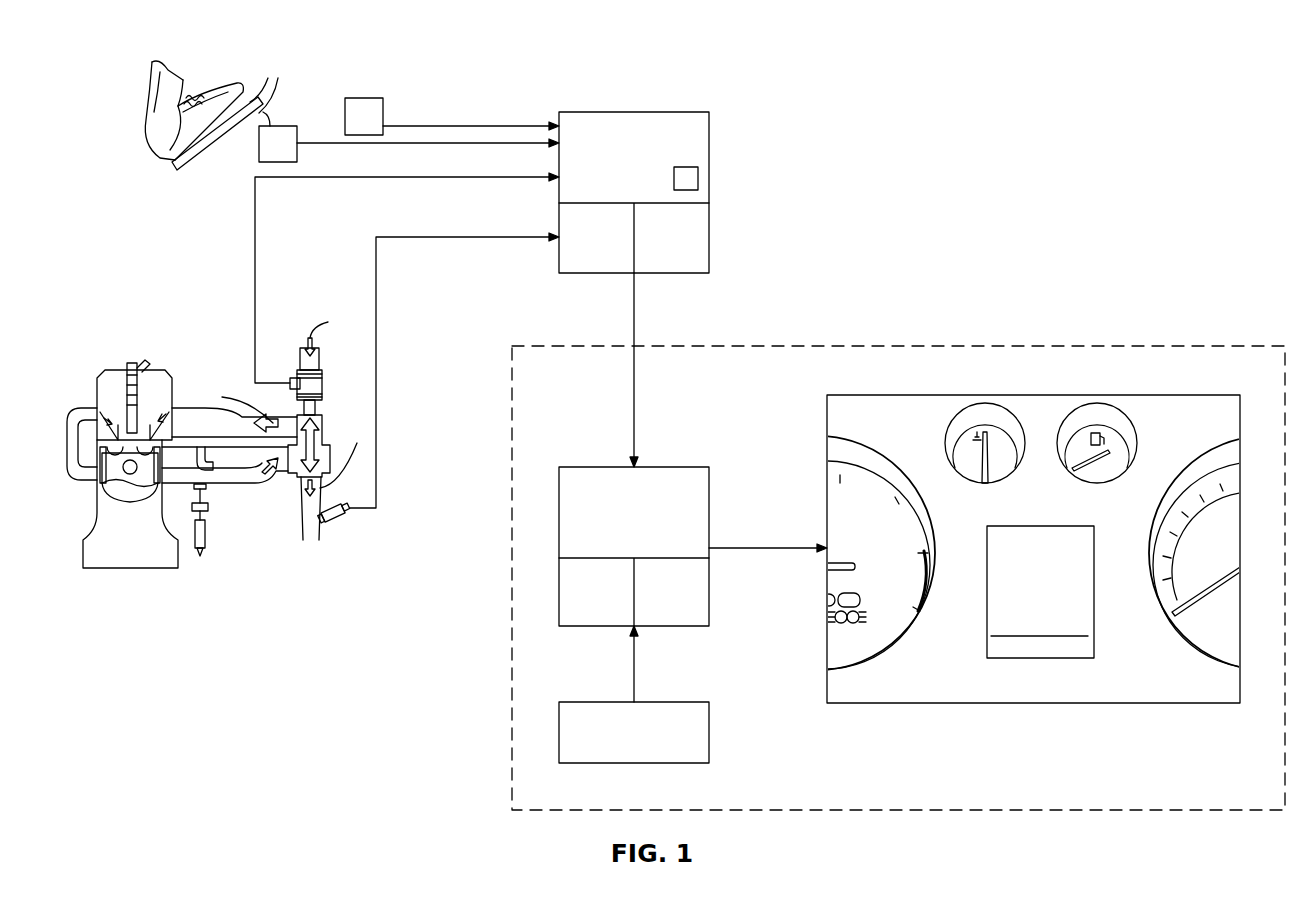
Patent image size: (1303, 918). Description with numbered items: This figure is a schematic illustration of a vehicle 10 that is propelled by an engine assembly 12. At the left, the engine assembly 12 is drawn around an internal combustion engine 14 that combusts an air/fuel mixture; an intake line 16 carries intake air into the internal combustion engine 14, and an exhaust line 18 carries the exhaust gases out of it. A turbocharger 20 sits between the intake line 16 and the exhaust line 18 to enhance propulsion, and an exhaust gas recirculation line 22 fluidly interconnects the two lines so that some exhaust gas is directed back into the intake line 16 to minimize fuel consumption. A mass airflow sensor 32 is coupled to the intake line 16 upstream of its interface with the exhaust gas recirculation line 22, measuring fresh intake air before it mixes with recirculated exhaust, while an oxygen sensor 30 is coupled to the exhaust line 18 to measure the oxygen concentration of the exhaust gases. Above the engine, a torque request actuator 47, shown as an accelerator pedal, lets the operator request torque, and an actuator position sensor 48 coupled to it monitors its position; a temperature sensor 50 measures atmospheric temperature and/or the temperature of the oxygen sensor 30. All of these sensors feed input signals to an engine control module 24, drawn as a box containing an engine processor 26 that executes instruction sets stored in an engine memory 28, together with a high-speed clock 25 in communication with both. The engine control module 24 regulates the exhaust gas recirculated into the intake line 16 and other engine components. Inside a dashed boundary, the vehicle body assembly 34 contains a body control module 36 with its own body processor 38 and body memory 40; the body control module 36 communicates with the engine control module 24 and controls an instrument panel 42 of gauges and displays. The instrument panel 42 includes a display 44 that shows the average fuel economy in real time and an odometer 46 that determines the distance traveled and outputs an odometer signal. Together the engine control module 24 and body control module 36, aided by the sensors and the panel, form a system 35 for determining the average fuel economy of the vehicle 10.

The vehicle 10 is at (614, 32).
The engine assembly 12 is at (82, 347).
The internal combustion engine 14 is at (97, 390).
The intake line 16 is at (273, 417).
The exhaust line 18 is at (253, 483).
The turbocharger 20 is at (407, 378).
The exhaust gas recirculation line 22 is at (247, 460).
The engine control module 24 is at (663, 176).
The high-speed clock 25 is at (700, 180).
The engine processor 26 is at (583, 251).
The engine memory 28 is at (658, 251).
The oxygen sensor 30 is at (340, 522).
The mass airflow sensor 32 is at (297, 380).
The vehicle body assembly 34 is at (1070, 346).
The system 35 is at (782, 62).
The body control module 36 is at (644, 531).
The body processor 38 is at (583, 604).
The body memory 40 is at (658, 604).
The instrument panel 42 is at (990, 396).
The display 44 is at (1078, 642).
The odometer 46 is at (675, 702).
The torque request actuator 47 is at (172, 165).
The actuator position sensor 48 is at (283, 125).
The temperature sensor 50 is at (365, 98).